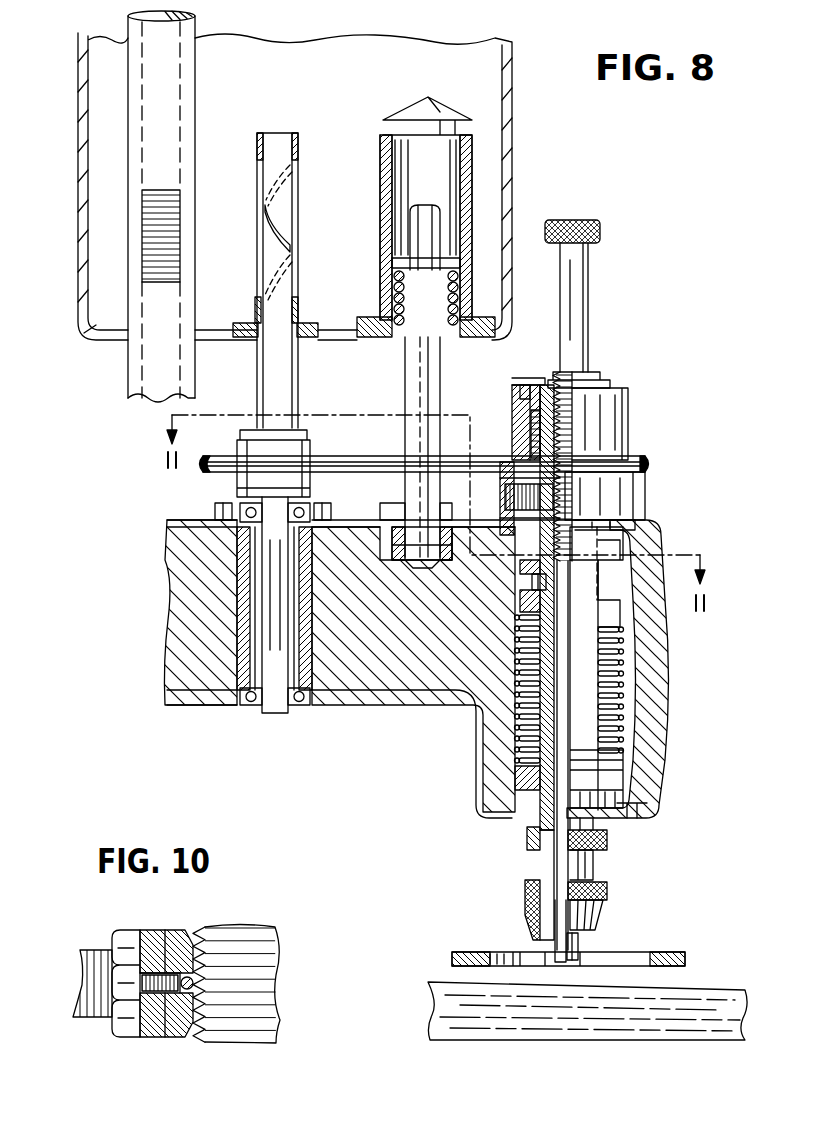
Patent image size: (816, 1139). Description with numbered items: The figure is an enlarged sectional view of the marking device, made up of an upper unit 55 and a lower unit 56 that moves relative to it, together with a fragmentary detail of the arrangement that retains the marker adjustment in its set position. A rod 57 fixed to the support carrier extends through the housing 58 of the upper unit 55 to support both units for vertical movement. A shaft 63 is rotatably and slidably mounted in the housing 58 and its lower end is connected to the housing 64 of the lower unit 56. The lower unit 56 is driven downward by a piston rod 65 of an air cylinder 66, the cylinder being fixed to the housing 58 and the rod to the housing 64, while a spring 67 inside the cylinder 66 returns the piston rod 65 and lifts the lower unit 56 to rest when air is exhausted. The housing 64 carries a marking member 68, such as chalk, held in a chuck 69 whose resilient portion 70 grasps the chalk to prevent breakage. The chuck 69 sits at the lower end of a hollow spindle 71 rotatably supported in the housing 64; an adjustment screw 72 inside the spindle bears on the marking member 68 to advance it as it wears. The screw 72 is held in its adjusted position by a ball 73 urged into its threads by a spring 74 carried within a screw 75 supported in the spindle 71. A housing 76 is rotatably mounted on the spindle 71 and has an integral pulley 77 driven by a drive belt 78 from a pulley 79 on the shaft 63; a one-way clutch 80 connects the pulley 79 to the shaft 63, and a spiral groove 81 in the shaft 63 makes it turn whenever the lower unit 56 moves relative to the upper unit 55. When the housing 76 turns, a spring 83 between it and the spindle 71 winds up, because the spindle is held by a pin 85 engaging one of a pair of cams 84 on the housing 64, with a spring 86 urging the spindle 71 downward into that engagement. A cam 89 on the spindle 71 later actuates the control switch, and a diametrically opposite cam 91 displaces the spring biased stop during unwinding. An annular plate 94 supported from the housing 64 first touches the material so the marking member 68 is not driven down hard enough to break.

In FIG. 8, the upper unit 55 is at (66, 231).
In FIG. 8, the lower unit 56 is at (220, 712).
In FIG. 8, the rod 57 is at (128, 376).
In FIG. 8, the housing 58 is at (78, 112).
In FIG. 8, the shaft 63 is at (298, 362).
In FIG. 8, the housing 64 is at (362, 706).
In FIG. 8, the piston rod 65 is at (405, 378).
In FIG. 8, the air cylinder 66 is at (372, 186).
In FIG. 8, the spring 67 is at (453, 303).
In FIG. 8, the marking member 68 is at (580, 950).
In FIG. 8, the chuck 69 is at (518, 890).
In FIG. 8, the resilient portion 70 is at (553, 944).
In FIG. 8, the spindle 71 is at (562, 722).
In FIG. 10, the spindle 71 is at (148, 928).
In FIG. 8, the adjustment screw 72 is at (588, 310).
In FIG. 10, the adjustment screw 72 is at (226, 1045).
In FIG. 8, the ball 73 is at (582, 494).
In FIG. 10, the ball 73 is at (163, 930).
In FIG. 10, the spring 74 is at (172, 1038).
In FIG. 8, the screw 75 is at (505, 496).
In FIG. 10, the screw 75 is at (96, 950).
In FIG. 8, the housing 76 is at (652, 497).
In FIG. 8, the pulley 77 is at (628, 460).
In FIG. 8, the drive belt 78 is at (652, 464).
In FIG. 8, the pulley 79 is at (215, 456).
In FIG. 8, the clutch 80 is at (243, 422).
In FIG. 8, the spiral groove 81 is at (294, 297).
In FIG. 8, the spring 83 is at (520, 413).
In FIG. 8, the cams 84 is at (453, 528).
In FIG. 8, the pin 85 is at (520, 566).
In FIG. 8, the spring 86 is at (516, 620).
In FIG. 8, the cam 89 is at (532, 582).
In FIG. 8, the cam 91 is at (604, 562).
In FIG. 8, the annular plate 94 is at (452, 956).